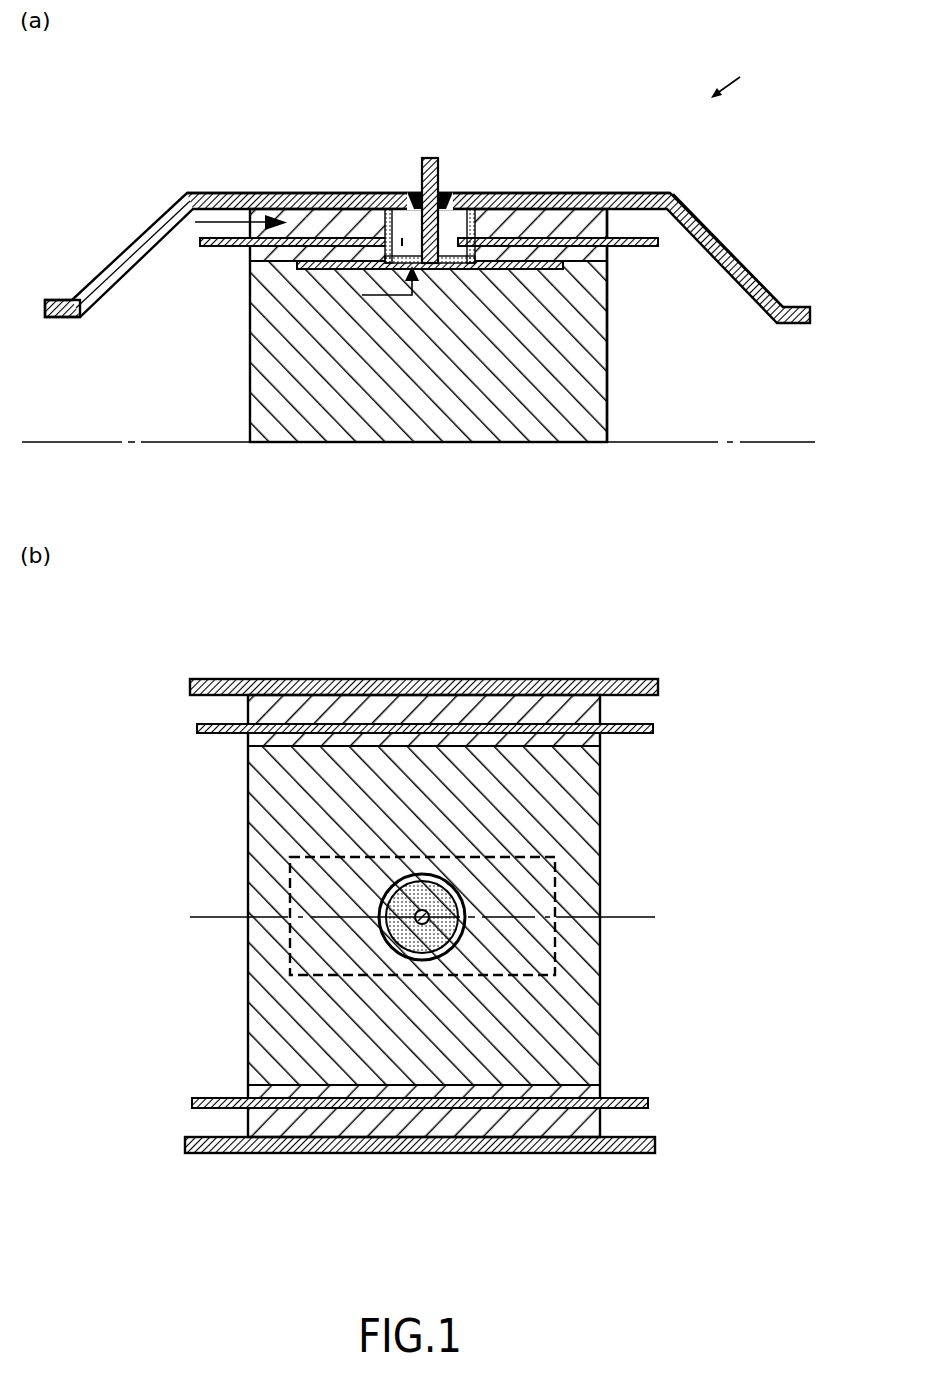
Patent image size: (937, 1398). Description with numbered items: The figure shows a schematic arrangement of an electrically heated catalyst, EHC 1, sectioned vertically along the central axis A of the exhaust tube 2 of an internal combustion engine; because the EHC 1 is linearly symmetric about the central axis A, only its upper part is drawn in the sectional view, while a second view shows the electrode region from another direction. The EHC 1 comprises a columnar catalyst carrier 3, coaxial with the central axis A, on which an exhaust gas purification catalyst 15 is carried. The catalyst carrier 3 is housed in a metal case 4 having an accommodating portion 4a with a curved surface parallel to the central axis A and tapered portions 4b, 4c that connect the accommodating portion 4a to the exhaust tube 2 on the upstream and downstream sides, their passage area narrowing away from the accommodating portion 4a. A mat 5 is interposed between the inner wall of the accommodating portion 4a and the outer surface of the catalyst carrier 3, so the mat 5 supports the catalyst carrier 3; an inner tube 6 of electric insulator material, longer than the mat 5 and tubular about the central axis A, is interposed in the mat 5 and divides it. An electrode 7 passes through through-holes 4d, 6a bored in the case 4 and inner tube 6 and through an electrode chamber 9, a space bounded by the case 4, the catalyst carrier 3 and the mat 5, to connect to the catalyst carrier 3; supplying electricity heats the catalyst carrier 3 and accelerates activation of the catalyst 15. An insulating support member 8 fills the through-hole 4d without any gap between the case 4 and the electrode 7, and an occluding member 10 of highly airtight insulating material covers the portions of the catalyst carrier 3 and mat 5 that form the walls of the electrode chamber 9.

The EHC 1 is at (787, 71).
The exhaust tube 2 is at (55, 300).
The catalyst carrier 3 is at (250, 376).
The case 4 is at (288, 194).
The accommodating portion 4a is at (598, 194).
The tapered portion 4b is at (135, 243).
The tapered portion 4c is at (728, 250).
The through-hole 4d is at (412, 200).
The mat 5 is at (592, 227).
The inner tube 6 is at (240, 244).
The through-hole 6a is at (470, 238).
The electrode 7 is at (429, 156).
The support member 8 is at (447, 200).
The electrode chamber 9 is at (413, 230).
The occluding member 10 is at (385, 235).
The exhaust gas purification catalyst 15 is at (606, 376).
The central axis A is at (735, 443).